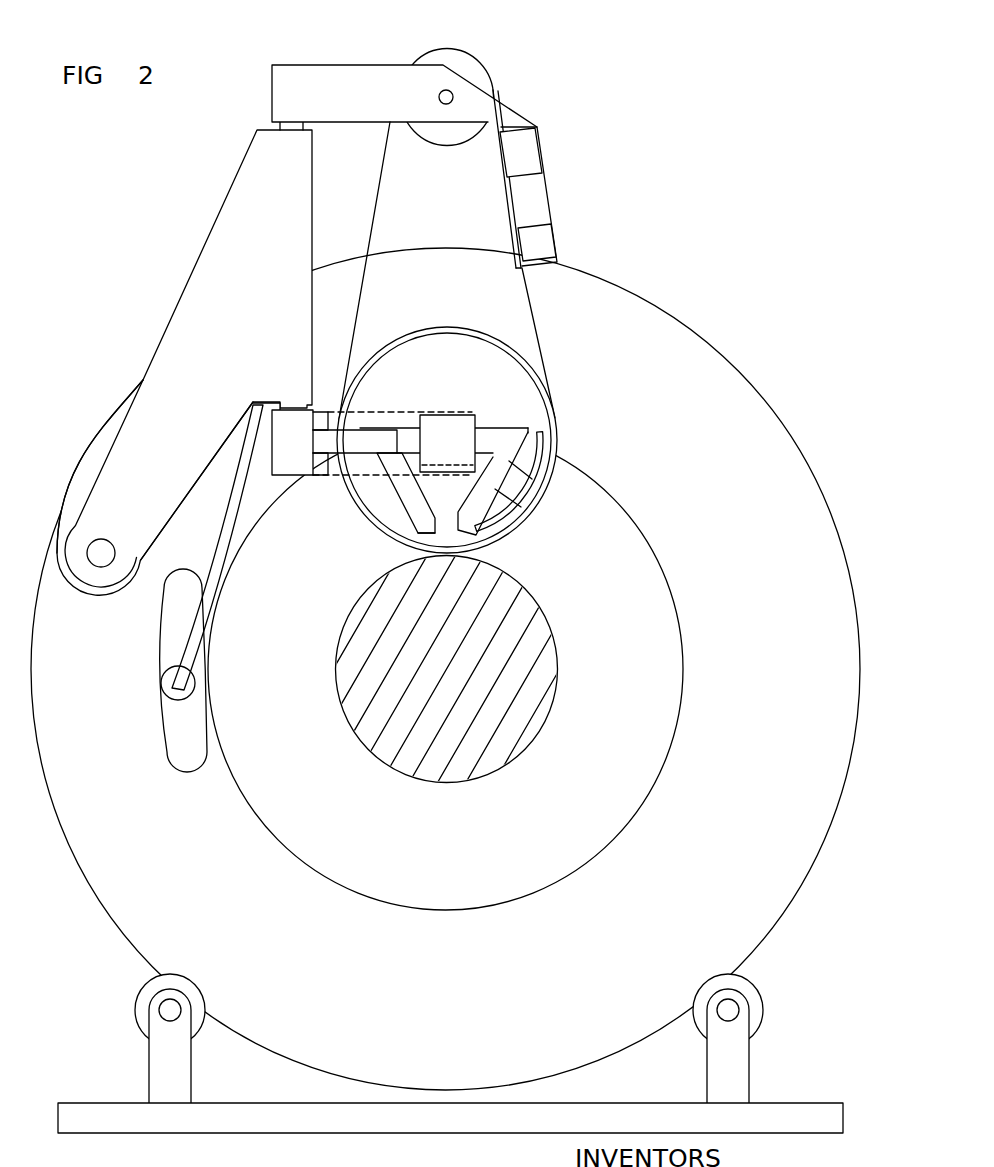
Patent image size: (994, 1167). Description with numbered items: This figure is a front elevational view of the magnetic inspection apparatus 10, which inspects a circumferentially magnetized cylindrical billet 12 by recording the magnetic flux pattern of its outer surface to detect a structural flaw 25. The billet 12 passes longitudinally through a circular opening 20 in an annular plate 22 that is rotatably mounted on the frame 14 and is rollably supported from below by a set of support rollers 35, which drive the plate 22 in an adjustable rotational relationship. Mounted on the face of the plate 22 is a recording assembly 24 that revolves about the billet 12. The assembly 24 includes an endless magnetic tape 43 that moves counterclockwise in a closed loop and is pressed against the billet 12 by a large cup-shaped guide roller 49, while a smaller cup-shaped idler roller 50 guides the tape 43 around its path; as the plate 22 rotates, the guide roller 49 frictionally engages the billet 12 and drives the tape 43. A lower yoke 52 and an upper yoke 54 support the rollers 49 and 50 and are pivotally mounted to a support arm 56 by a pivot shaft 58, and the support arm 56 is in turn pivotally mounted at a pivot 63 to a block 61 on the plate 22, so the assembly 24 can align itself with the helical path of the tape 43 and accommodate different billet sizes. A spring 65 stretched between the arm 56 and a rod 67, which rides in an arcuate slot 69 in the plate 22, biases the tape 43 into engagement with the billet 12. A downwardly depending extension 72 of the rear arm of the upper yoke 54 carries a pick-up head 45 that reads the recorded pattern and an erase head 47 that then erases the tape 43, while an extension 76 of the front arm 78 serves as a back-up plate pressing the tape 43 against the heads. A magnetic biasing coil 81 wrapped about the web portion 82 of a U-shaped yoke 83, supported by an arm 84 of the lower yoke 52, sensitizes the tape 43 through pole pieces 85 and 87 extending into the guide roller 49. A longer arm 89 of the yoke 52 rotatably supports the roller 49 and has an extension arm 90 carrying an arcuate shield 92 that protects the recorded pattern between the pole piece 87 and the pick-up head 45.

The magnetic inspection apparatus 10 is at (693, 180).
The cylindrical billet 12 is at (560, 650).
The frame 14 is at (608, 1110).
The circular opening 20 is at (656, 563).
The annular plate 22 is at (698, 347).
The recording assembly 24 is at (566, 378).
The flaw 25 is at (469, 569).
The support rollers 35 is at (137, 1004).
The endless magnetic tape 43 is at (539, 308).
The pick-up head 45 is at (548, 238).
The erase head 47 is at (528, 160).
The guide roller 49 is at (438, 333).
The idler roller 50 is at (465, 67).
The lower yoke 52 is at (275, 435).
The upper yoke 54 is at (291, 78).
The support arm 56 is at (243, 190).
The pivot shaft 58 is at (304, 127).
The block 61 is at (113, 590).
The pivot 63 is at (96, 560).
The spring 65 is at (218, 543).
The rod 67 is at (161, 681).
The arcuate slot 69 is at (182, 770).
The downwardly depending extension 72 is at (538, 193).
The back-up plate extension 76 is at (505, 203).
The front arm 78 is at (389, 92).
The magnetic biasing coil 81 is at (447, 430).
The web portion 82 is at (408, 440).
The U-shaped yoke 83 is at (488, 429).
The arm 84 is at (363, 442).
The pole piece 85 is at (407, 493).
The pole piece 87 is at (423, 527).
The longer arm 89 is at (325, 417).
The extension arm 90 is at (517, 480).
The arcuate shield 92 is at (500, 520).